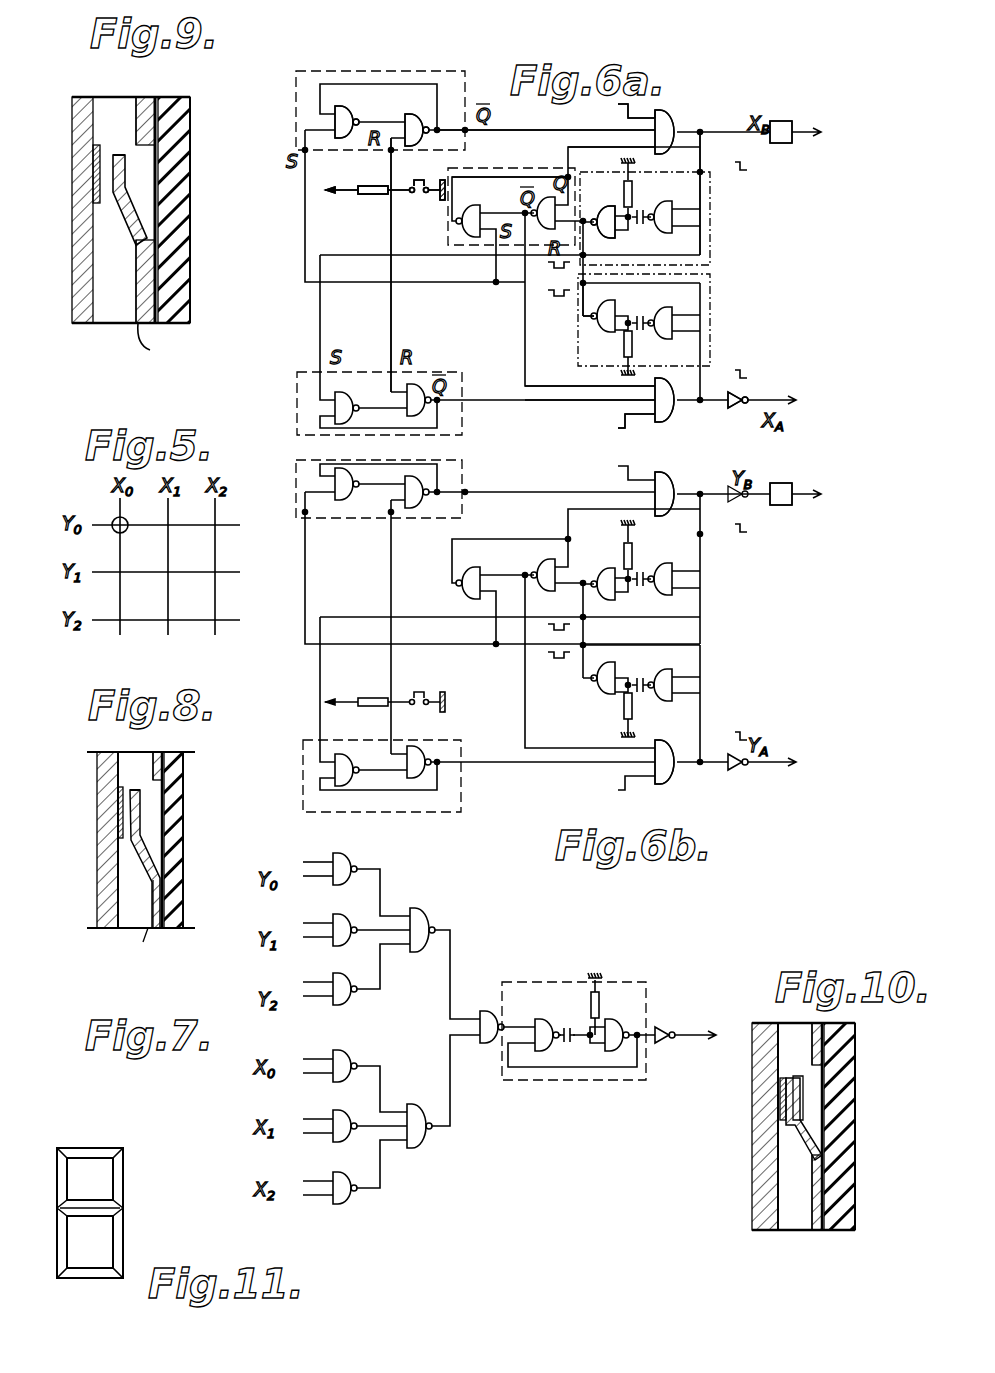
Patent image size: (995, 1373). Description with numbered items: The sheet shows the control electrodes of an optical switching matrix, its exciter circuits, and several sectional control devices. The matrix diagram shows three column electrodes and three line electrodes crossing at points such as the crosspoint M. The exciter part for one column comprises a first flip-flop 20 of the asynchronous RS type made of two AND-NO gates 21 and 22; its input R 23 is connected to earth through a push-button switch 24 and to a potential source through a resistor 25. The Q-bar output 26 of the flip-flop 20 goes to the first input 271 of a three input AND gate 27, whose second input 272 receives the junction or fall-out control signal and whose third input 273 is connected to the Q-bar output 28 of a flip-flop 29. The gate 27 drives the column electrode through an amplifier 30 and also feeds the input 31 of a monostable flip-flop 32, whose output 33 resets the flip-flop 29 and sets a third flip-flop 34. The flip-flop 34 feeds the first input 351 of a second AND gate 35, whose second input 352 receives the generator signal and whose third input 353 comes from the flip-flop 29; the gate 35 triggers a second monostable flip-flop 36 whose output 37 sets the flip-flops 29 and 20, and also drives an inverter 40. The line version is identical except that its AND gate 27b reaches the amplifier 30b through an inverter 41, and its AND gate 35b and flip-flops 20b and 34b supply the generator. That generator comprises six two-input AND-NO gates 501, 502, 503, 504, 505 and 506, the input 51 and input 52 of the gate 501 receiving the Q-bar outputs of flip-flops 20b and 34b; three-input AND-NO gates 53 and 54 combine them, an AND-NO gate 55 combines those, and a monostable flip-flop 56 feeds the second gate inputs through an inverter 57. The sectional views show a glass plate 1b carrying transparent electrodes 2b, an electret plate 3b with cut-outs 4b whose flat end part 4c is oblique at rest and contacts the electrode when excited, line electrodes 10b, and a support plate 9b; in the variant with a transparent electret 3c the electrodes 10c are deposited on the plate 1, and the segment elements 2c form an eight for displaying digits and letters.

In FIG. 10, the housing 1 is at (762, 1132).
In FIG. 9, the glass plate 1b is at (72, 240).
In FIG. 8, the glass plate 1b is at (97, 856).
In FIG. 9, the transparent electrodes 2b is at (93, 156).
In FIG. 8, the transparent electrodes 2b is at (118, 812).
In FIG. 10, the transparent electrodes 2b is at (780, 1100).
In FIG. 11, the elements 2c is at (125, 1240).
In FIG. 9, the plate 3b is at (158, 344).
In FIG. 8, the plate 3b is at (140, 945).
In FIG. 10, the transparent electret 3c is at (786, 1088).
In FIG. 9, the cut-outs 4b is at (136, 212).
In FIG. 8, the cut-outs 4b is at (136, 865).
In FIG. 9, the end part 4c is at (119, 155).
In FIG. 8, the end part 4c is at (136, 790).
In FIG. 9, the support plate 9b is at (190, 185).
In FIG. 8, the support plate 9b is at (172, 790).
In FIG. 10, the support plate 9b is at (855, 1082).
In FIG. 9, the electrodes 10b is at (190, 115).
In FIG. 8, the electrodes 10b is at (156, 860).
In FIG. 10, the electrodes 10c is at (822, 1172).
In FIG. 5, the crosspoint M is at (126, 531).
In FIG. 6A, the first flip-flop 20 is at (385, 72).
In FIG. 6B, the flip-flop 20b is at (462, 478).
In FIG. 6A, the AND-NO gate 21 is at (352, 120).
In FIG. 6A, the AND-NO gate 22 is at (415, 125).
In FIG. 6A, the input R 23 is at (406, 265).
In FIG. 6A, the switch 24 is at (418, 196).
In FIG. 6A, the resistor 25 is at (372, 196).
In FIG. 6A, the Q-bar output 26 is at (467, 132).
In FIG. 6A, the three input AND gate 27 is at (672, 127).
In FIG. 6A, the first input 271 is at (650, 128).
In FIG. 6A, the second input 272 is at (658, 112).
In FIG. 6A, the third input 273 is at (655, 147).
In FIG. 6B, the AND gate 27b is at (666, 516).
In FIG. 6A, the Q-bar output 28 is at (575, 168).
In FIG. 6A, the flip-flop 29 is at (530, 172).
In FIG. 6A, the amplifier 30 is at (781, 128).
In FIG. 6B, the amplifier 30b is at (781, 505).
In FIG. 6A, the input 31 is at (701, 175).
In FIG. 6A, the monostable flip-flop 32 is at (710, 240).
In FIG. 6A, the output 33 is at (580, 225).
In FIG. 6A, the third flip-flop 34 is at (435, 372).
In FIG. 6B, the flip-flop 34b is at (461, 790).
In FIG. 6A, the second AND gate 35 is at (672, 412).
In FIG. 6A, the first input 351 is at (650, 402).
In FIG. 6A, the second input 352 is at (655, 420).
In FIG. 6A, the third input 353 is at (650, 390).
In FIG. 6B, the AND gate 35b is at (668, 776).
In FIG. 6A, the second monostable flip-flop 36 is at (710, 336).
In FIG. 6A, the output 37 is at (582, 286).
In FIG. 6A, the inverter 40 is at (740, 398).
In FIG. 6B, the inverter 41 is at (733, 504).
In FIG. 7, the input 51 is at (328, 862).
In FIG. 7, the input 52 is at (328, 876).
In FIG. 7, the AND-NO gate 501 is at (352, 866).
In FIG. 7, the AND-NO gate 502 is at (340, 940).
In FIG. 7, the AND-NO gate 503 is at (344, 1000).
In FIG. 7, the AND-NO gate 504 is at (342, 1075).
In FIG. 7, the AND-NO gate 505 is at (342, 1135).
In FIG. 7, the AND-NO gate 506 is at (350, 1195).
In FIG. 7, the AND-NO gate 53 is at (422, 922).
In FIG. 7, the AND-NO gate 54 is at (418, 1140).
In FIG. 7, the AND-NO gate 55 is at (488, 1012).
In FIG. 7, the monostable flip-flop 56 is at (602, 1080).
In FIG. 7, the inverter 57 is at (665, 1030).